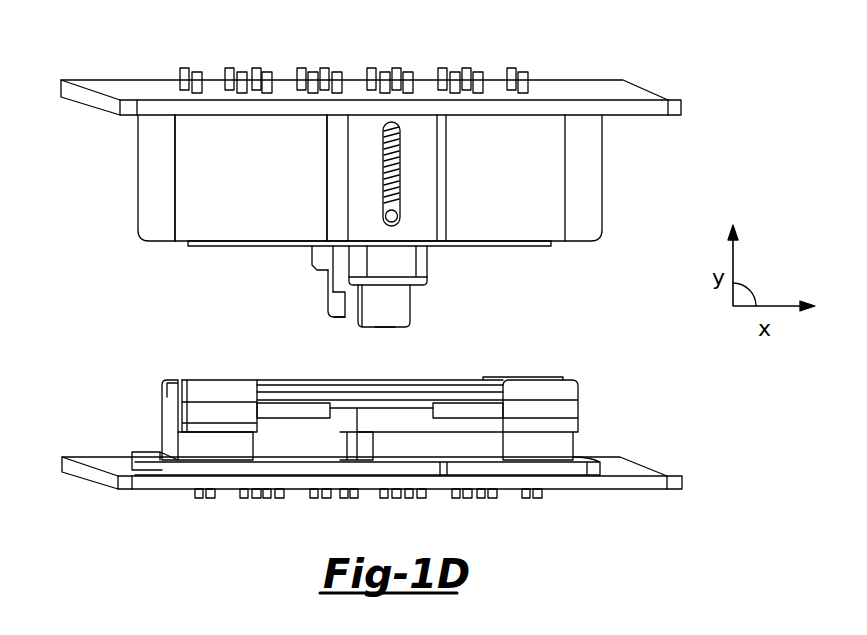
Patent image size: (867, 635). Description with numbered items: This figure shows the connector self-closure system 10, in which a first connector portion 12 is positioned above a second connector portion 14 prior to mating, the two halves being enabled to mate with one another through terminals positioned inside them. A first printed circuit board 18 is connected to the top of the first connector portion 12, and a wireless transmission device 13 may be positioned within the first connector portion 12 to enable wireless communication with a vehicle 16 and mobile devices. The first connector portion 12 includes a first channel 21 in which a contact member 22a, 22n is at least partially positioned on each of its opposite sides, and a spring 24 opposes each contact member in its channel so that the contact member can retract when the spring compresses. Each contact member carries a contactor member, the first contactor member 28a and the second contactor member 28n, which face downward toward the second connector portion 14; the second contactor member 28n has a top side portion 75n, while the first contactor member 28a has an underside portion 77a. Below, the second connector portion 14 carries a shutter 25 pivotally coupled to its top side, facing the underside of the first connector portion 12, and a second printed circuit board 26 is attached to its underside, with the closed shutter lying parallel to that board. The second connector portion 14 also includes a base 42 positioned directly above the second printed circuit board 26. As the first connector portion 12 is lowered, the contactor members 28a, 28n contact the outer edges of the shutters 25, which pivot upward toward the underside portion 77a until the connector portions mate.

The connector self-closure system 10 is at (655, 53).
The first connector portion 12 is at (603, 162).
The wireless transmission device 13 is at (247, 197).
The second connector portion 14 is at (192, 443).
The vehicle 16 is at (70, 37).
The first printed circuit board 18 is at (575, 88).
The first channel 21 is at (423, 209).
The contact member 22a is at (320, 255).
The contact member 22n is at (420, 270).
The spring 24 is at (390, 172).
The shutter 25 is at (503, 365).
The second printed circuit board 26 is at (645, 470).
The first contactor member 28a is at (341, 298).
The second contactor member 28n is at (398, 315).
The base 42 is at (148, 453).
The top side portion 75n is at (383, 315).
The underside portion 77a is at (342, 317).